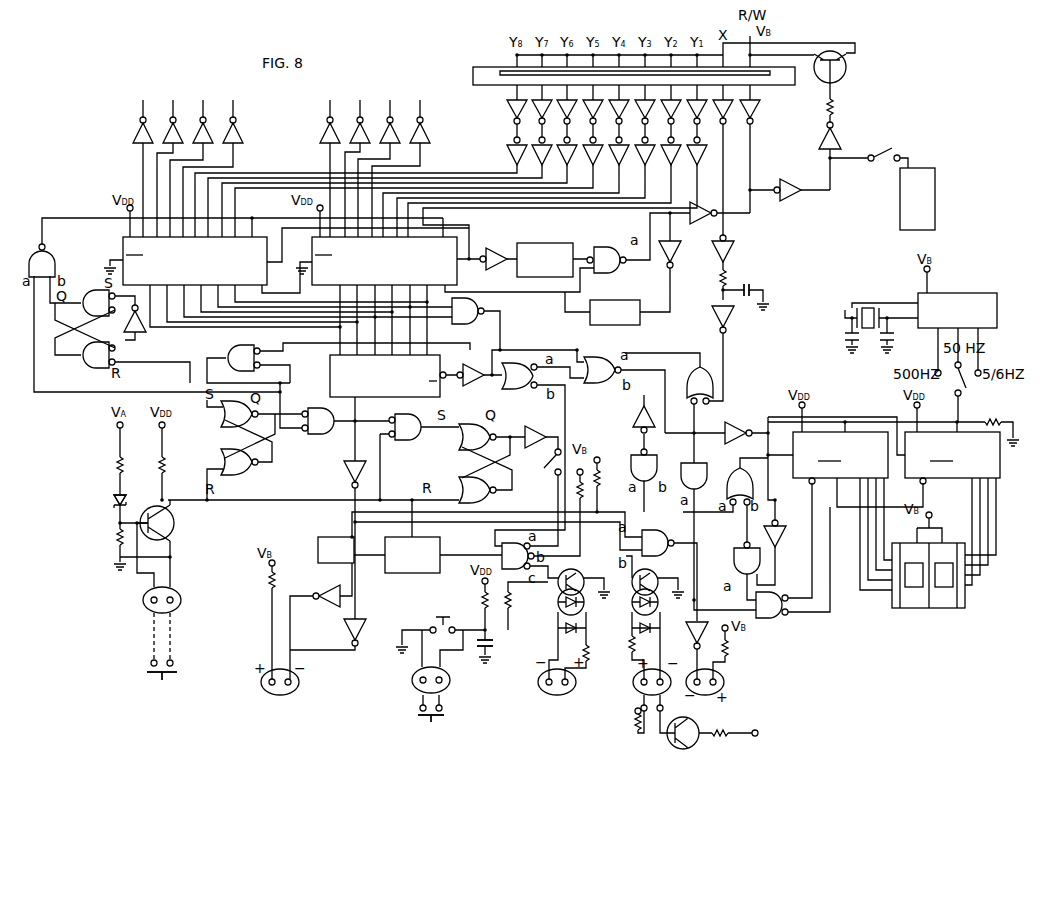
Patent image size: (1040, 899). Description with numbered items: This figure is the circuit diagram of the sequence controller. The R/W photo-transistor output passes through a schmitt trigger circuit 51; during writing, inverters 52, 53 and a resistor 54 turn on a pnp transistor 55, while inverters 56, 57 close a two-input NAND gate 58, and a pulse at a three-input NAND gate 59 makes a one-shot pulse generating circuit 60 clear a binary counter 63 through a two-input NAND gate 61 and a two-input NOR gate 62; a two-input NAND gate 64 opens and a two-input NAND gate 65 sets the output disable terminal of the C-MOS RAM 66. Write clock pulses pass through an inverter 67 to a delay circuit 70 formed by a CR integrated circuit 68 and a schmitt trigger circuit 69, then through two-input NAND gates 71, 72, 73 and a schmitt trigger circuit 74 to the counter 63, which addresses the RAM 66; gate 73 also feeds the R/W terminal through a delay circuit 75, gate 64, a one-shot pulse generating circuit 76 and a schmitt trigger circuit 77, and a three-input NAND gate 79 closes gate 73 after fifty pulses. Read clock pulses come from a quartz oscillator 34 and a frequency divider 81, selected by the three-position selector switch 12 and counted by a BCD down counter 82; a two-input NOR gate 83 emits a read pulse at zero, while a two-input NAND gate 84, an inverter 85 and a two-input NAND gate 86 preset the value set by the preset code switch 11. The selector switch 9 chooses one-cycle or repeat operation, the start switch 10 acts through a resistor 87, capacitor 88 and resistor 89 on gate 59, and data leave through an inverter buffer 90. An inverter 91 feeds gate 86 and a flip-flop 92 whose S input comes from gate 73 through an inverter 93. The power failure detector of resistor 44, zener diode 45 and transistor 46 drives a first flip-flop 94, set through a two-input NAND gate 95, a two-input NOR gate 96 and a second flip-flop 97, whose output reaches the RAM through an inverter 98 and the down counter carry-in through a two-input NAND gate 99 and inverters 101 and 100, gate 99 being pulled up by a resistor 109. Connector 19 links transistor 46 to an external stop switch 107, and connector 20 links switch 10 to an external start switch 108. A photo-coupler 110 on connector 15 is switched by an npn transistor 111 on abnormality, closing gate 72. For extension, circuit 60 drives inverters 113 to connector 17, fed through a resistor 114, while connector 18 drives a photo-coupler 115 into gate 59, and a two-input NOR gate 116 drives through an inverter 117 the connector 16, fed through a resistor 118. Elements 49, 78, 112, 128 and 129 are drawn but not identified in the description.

The 1-cycle/repetition cycle selector switch 9 is at (549, 466).
The start switch 10 is at (441, 616).
The preset code switch 11 is at (915, 608).
The 3-position selector switch 12 is at (960, 394).
The abnormality detection connector 15 is at (642, 683).
The abnormality detection connector 16 is at (733, 683).
The extension connector 17 is at (265, 686).
The extension connector 18 is at (542, 689).
The connector for remote-controlling stop switch 19 is at (178, 606).
The connector for remote-controlling start switch 20 is at (414, 697).
The quartz oscillator 34 is at (867, 303).
The resistor 44 is at (116, 465).
The zener diode 45 is at (114, 504).
The transistor 46 is at (174, 524).
The keyboard matrix 49 is at (492, 68).
The schmitt trigger circuit 51 is at (640, 121).
The inverter 52 is at (790, 180).
The inverter 53 is at (818, 140).
The resistor 54 is at (836, 109).
The pnp transistor 55 is at (848, 69).
The inverter 56 is at (702, 224).
The inverter 57 is at (677, 250).
The 2-input NAND gate 58 is at (694, 476).
The 3-input NAND gate 59 is at (518, 556).
The one-shot pulse generating circuit 60 is at (422, 565).
The 2-input NAND gate 61 is at (336, 550).
The 2-input NOR gate 62 is at (318, 421).
The binary counter 63 is at (388, 376).
The 2-input NAND gate 64 is at (606, 260).
The 2-input NAND gate 65 is at (42, 260).
The C-MOS RAM 66 is at (295, 260).
The inverter 67 is at (734, 254).
The CR integrated circuit 68 is at (737, 278).
The schmitt trigger circuit 69 is at (731, 333).
The delay circuit 70 is at (786, 279).
The 2-input NAND gate 71 is at (700, 385).
The 2-input NAND gate 72 is at (602, 370).
The 2-input NAND gate 73 is at (519, 376).
The schmitt trigger circuit 74 is at (474, 387).
The delay circuit 75 is at (615, 312).
The one-shot pulse generating circuit 76 is at (554, 269).
The schmitt trigger circuit 77 is at (488, 253).
The output buffer 78 is at (507, 162).
The 3-input NAND gate 79 is at (468, 311).
The frequency divider 81 is at (957, 310).
The BCD down counter 82 is at (898, 456).
The 2-input NOR gate 83 is at (772, 605).
The 2-input NAND gate 84 is at (747, 558).
The inverter 85 is at (782, 545).
The 2-input NAND gate 86 is at (740, 486).
The resistor 87 is at (480, 602).
The capacitor 88 is at (495, 647).
The resistor 89 is at (512, 606).
The inverter buffer 90 is at (289, 121).
The inverter 91 is at (344, 475).
The flip-flop 92 is at (94, 389).
The inverter 93 is at (140, 328).
The first flip-flop 94 is at (206, 451).
The 2-input NAND gate 95 is at (244, 358).
The 2-input NOR gate 96 is at (405, 427).
The second flip-flop 97 is at (437, 468).
The inverter 98 is at (535, 428).
The 2-input NAND gate 99 is at (644, 465).
The inverter 100 is at (733, 426).
The inverter 101 is at (635, 410).
The external stop switch 107 is at (160, 680).
The external start switch 108 is at (445, 721).
The resistor 109 is at (598, 467).
The photo-coupler 110 is at (632, 589).
The npn transistor 111 is at (695, 722).
The inverter 112 is at (336, 588).
The inverters 113 is at (344, 638).
The resistor 114 is at (268, 584).
The photo-coupler 115 is at (556, 584).
The 2-input NOR gate 116 is at (658, 543).
The inverter 117 is at (695, 627).
The resistor 118 is at (729, 652).
The switch 128 is at (885, 148).
The battery 129 is at (936, 188).